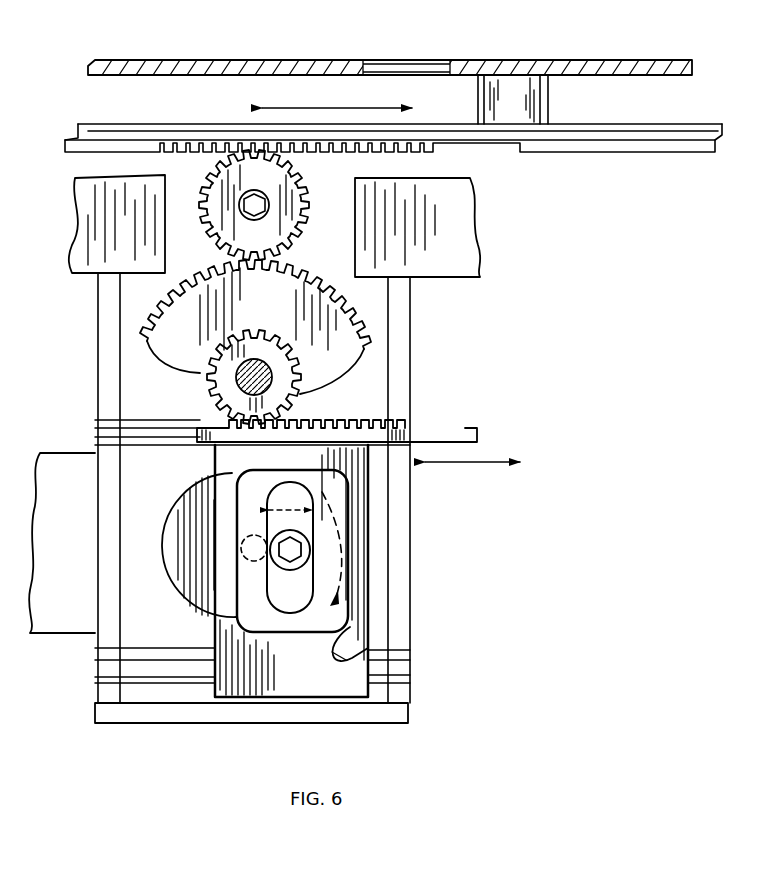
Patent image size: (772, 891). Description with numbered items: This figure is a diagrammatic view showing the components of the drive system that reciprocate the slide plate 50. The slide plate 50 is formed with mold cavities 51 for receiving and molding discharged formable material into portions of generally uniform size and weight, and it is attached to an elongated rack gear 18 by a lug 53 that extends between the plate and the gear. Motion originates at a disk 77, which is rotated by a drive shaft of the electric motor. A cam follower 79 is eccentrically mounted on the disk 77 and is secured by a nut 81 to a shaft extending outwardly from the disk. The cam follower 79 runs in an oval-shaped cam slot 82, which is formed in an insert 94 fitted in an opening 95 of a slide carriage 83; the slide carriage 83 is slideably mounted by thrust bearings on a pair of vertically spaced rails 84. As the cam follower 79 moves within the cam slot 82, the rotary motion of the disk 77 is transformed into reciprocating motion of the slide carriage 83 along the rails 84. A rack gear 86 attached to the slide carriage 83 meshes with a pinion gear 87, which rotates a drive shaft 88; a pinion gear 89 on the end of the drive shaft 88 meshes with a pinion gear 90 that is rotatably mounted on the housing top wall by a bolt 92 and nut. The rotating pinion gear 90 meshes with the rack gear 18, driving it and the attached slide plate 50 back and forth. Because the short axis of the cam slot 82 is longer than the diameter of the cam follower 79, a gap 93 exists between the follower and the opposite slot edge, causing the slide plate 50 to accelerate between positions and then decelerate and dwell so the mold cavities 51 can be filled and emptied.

The rack gear 18 is at (140, 136).
The slide plate 50 is at (220, 62).
The first set of mold cavities 51 is at (441, 65).
The lug 53 is at (525, 88).
The disk 77 is at (192, 568).
The cam follower 79 is at (301, 540).
The nut 81 is at (293, 552).
The cam slot 82 is at (262, 598).
The slide carriage 83 is at (350, 640).
The rail 84 is at (150, 424).
The rack gear 86 is at (452, 428).
The pinion gear 87 is at (282, 393).
The drive shaft 88 is at (264, 369).
The pinion gear 89 is at (271, 301).
The pinion gear 90 is at (262, 247).
The bolt 92 is at (250, 200).
The gap 93 is at (312, 575).
The insert 94 is at (340, 493).
The opening 95 is at (322, 658).